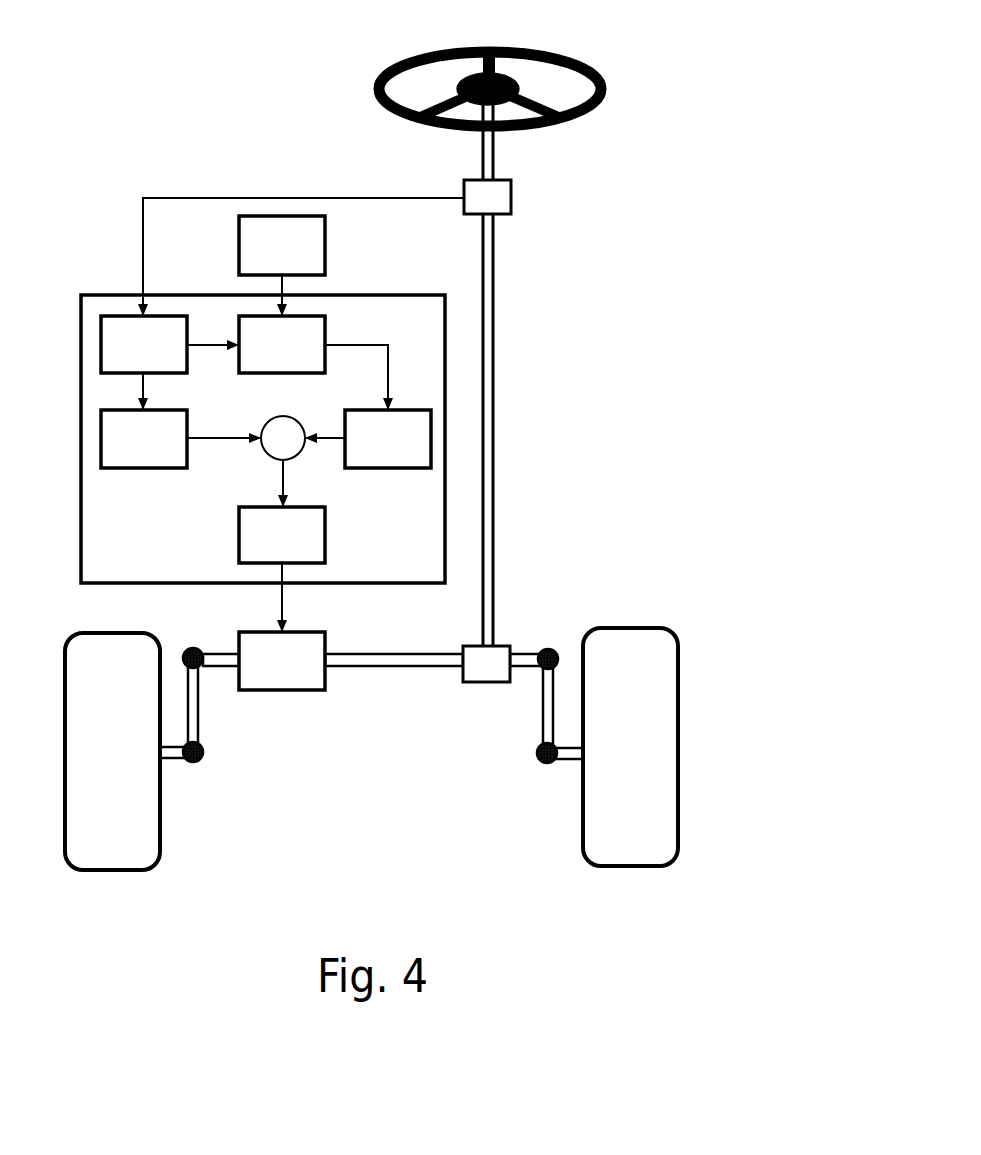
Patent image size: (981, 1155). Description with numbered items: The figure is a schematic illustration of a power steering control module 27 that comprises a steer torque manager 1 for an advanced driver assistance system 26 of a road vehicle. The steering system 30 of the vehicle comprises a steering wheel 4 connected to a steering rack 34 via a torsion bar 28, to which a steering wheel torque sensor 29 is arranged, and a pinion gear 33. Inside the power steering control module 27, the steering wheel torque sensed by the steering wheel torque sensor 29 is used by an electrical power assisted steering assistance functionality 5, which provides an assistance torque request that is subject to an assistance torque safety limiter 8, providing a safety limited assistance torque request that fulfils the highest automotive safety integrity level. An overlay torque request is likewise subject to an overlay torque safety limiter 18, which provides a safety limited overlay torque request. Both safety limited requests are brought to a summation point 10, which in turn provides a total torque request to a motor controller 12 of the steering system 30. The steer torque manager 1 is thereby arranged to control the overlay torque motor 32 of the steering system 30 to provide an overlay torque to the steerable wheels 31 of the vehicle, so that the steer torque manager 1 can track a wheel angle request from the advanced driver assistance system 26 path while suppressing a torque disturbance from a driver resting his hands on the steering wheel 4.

The steer torque manager 1 is at (274, 360).
The steering wheel 4 is at (530, 50).
The electrical power assisted steering assistance functionality 5 is at (135, 360).
The assistance torque safety limiter 8 is at (135, 453).
The summation point 10 is at (280, 450).
The motor controller 12 is at (266, 550).
The overlay torque safety limiter 18 is at (372, 453).
The advanced driver assistance system 26 is at (266, 261).
The power steering control module 27 is at (338, 292).
The torsion bar 28 is at (487, 300).
The steering wheel torque sensor 29 is at (498, 200).
The steering system 30 is at (522, 467).
The steerable wheels 31 is at (96, 770).
The overlay torque motor 32 is at (266, 675).
The pinion gear 33 is at (483, 660).
The steering rack 34 is at (393, 662).